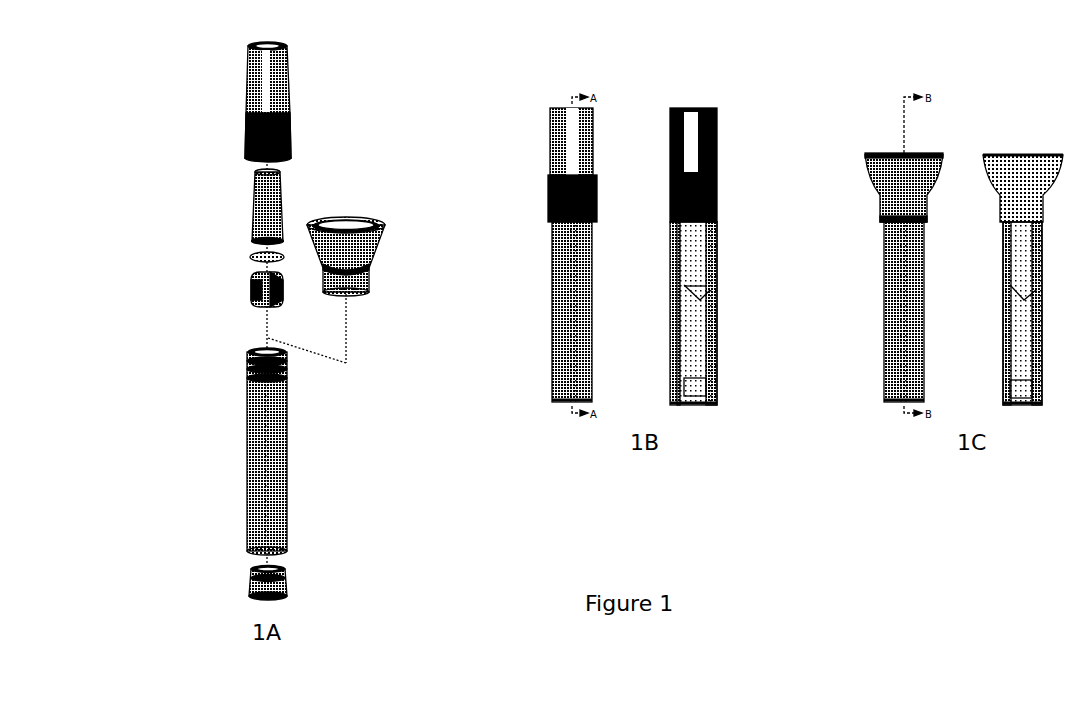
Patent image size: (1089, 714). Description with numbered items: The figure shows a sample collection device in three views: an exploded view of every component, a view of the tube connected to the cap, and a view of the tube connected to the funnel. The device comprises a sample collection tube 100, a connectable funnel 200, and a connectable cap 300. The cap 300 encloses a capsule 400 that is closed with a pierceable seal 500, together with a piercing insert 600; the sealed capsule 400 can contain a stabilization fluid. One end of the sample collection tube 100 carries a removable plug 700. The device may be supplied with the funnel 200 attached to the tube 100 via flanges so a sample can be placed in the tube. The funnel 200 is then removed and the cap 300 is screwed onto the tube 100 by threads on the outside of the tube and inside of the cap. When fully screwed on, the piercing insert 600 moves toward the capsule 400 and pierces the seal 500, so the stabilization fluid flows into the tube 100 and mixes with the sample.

The sample collection tube 100 is at (241, 450).
The connectable funnel 200 is at (397, 251).
The connectable cap 300 is at (243, 75).
The capsule 400 is at (245, 195).
The pierceable seal 500 is at (244, 251).
The piercing insert 600 is at (244, 285).
The removable plug 700 is at (239, 578).